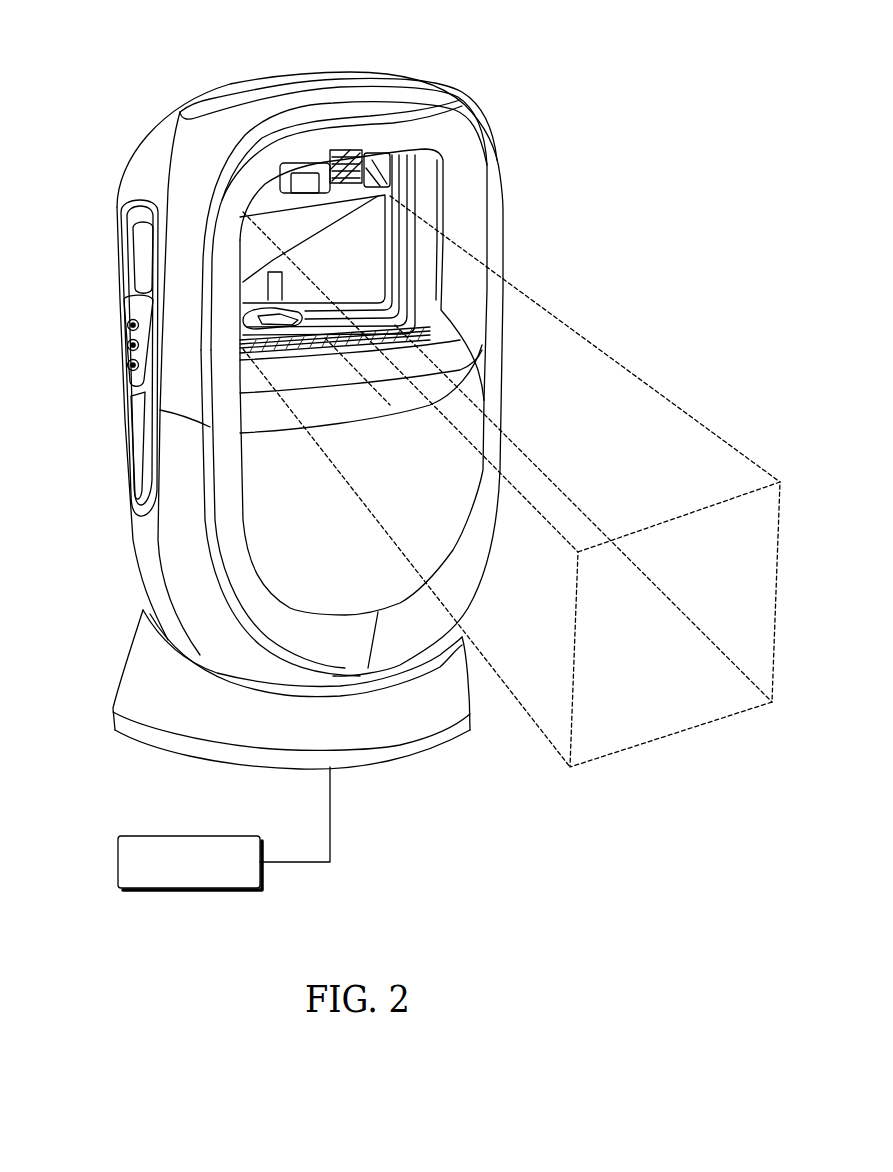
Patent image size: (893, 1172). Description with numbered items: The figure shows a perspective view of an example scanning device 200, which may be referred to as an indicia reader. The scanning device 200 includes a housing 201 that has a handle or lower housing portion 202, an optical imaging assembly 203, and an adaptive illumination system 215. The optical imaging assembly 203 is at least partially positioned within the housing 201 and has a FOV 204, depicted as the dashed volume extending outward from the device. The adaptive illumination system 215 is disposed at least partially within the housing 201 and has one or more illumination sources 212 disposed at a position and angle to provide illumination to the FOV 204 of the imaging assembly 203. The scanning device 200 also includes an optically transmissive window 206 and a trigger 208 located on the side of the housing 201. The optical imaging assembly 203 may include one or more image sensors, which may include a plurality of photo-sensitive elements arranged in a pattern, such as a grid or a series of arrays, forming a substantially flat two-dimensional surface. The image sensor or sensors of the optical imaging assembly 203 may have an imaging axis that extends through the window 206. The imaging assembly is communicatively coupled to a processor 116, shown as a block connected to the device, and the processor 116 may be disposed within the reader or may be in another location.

The scanning device 200 is at (123, 122).
The housing 201 is at (180, 575).
The lower housing portion 202 is at (190, 628).
The optical imaging assembly 203 is at (390, 300).
The FOV 204 is at (570, 767).
The optically transmissive window 206 is at (380, 172).
The trigger 208 is at (124, 341).
The illumination sources 212 is at (350, 150).
The adaptive illumination system 215 is at (305, 163).
The processor 116 is at (118, 860).